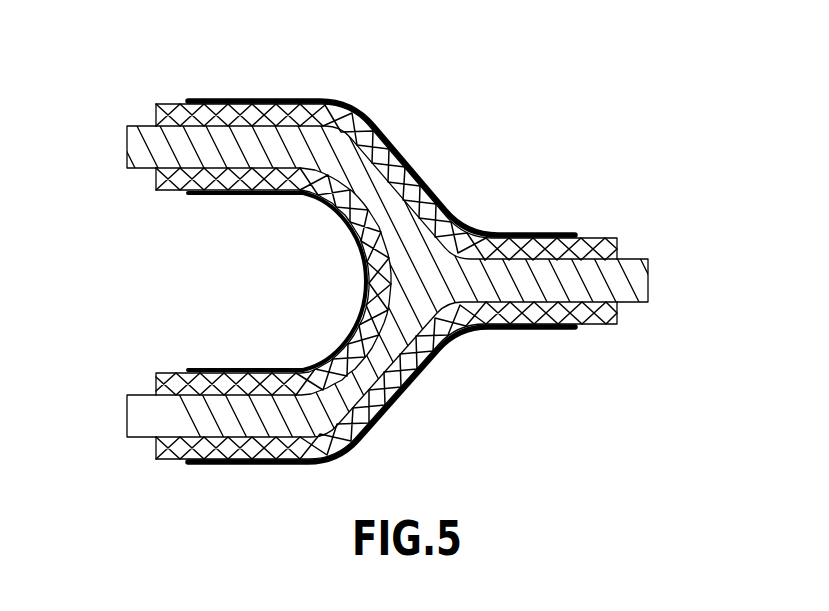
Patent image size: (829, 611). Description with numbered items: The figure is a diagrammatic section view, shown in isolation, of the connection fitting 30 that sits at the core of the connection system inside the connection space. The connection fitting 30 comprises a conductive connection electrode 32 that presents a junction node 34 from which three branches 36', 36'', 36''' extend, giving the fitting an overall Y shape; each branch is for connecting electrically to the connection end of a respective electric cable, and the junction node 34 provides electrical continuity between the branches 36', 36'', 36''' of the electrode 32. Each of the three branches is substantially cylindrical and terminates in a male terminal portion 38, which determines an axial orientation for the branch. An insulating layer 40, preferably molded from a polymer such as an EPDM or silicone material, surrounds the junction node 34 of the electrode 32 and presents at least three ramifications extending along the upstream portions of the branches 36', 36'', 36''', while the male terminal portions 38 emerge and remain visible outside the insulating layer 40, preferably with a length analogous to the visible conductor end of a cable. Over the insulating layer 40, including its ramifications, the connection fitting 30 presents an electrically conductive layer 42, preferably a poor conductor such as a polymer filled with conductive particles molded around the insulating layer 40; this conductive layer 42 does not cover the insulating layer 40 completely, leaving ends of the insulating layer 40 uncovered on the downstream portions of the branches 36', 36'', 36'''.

The connection fitting 30 is at (104, 97).
The conductive connection electrode 32 is at (381, 272).
The junction node 34 is at (463, 223).
The first branch 36' is at (551, 254).
The second branch 36'' is at (222, 122).
The third branch 36''' is at (225, 389).
The male terminal portion 38 is at (127, 146).
The insulating layer 40 is at (417, 170).
The electrically conductive layer 42 is at (412, 385).